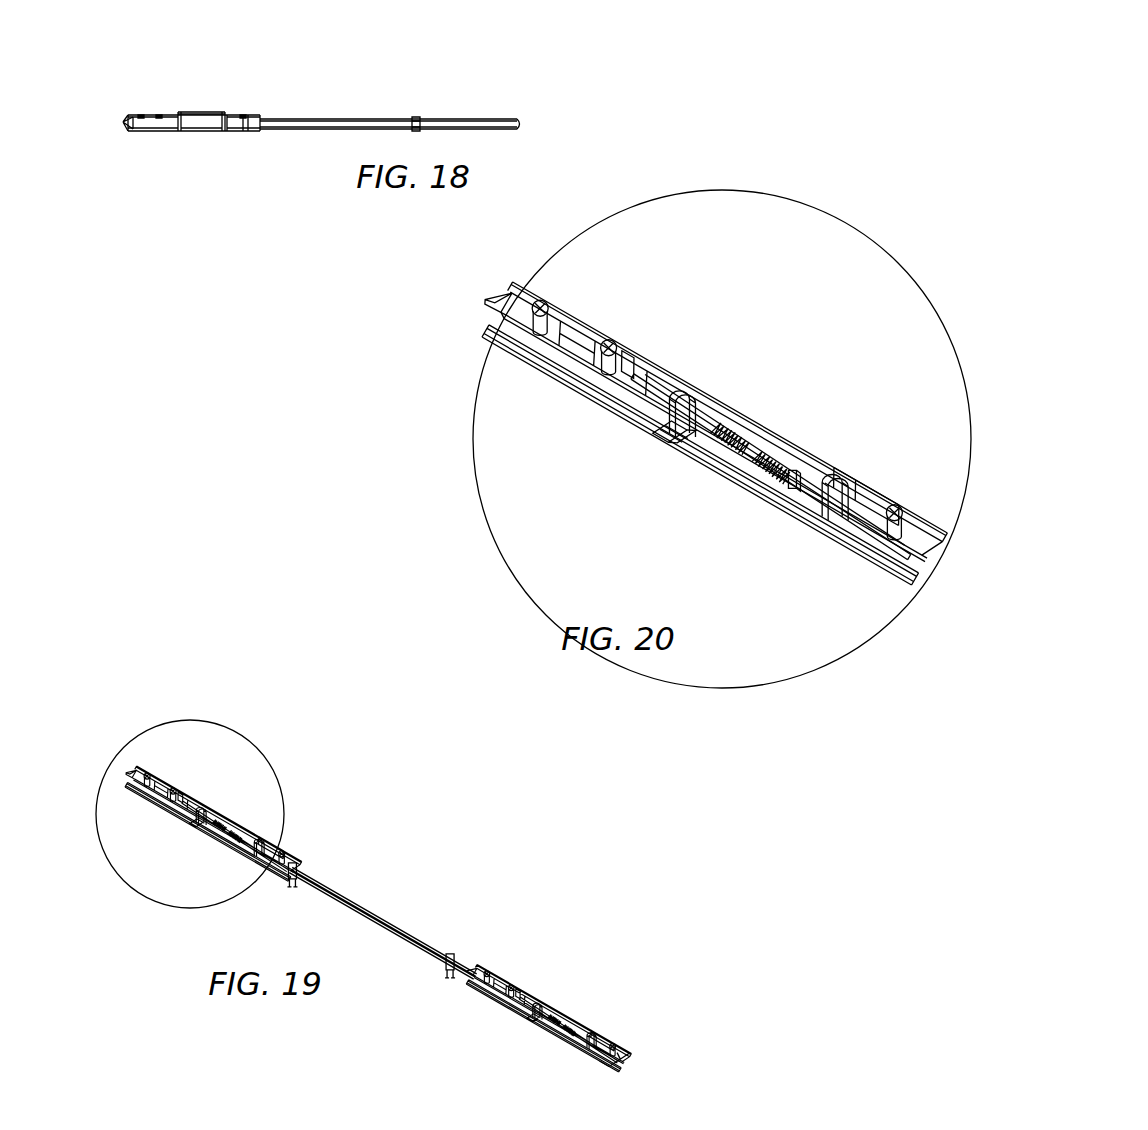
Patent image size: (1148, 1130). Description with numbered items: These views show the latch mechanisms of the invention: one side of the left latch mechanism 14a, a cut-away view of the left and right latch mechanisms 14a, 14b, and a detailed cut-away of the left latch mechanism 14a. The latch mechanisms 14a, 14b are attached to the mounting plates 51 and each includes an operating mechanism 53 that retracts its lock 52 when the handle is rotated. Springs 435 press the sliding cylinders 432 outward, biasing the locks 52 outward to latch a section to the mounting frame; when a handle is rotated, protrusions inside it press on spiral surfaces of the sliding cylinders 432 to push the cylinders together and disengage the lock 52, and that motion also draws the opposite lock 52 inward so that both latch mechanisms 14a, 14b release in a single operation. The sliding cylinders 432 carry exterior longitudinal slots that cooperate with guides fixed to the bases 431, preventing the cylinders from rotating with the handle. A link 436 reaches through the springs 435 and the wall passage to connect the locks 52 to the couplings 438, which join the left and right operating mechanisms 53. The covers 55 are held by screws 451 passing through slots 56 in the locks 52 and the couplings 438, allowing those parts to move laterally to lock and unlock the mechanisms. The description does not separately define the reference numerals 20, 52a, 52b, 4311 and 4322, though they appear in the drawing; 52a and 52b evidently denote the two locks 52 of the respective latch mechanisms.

In FIG. 18, the left latch mechanism 14a is at (191, 73).
In FIG. 20, the left latch mechanism 14a is at (790, 228).
In FIG. 19, the left latch mechanism 14a is at (123, 797).
In FIG. 19, the right latch mechanism 14b is at (502, 947).
In FIG. 19, the slide rail assembly 20 is at (207, 738).
In FIG. 18, the mounting plate 51 is at (297, 130).
In FIG. 18, the lock 52 is at (123, 122).
In FIG. 20, the lock 52 is at (567, 343).
In FIG. 19, the first end block 52a is at (130, 770).
In FIG. 19, the second end block 52b is at (632, 1055).
In FIG. 20, the operating mechanism 53 is at (720, 371).
In FIG. 18, the cover 55 is at (150, 130).
In FIG. 20, the cover 55 is at (608, 345).
In FIG. 20, the slot 56 is at (588, 358).
In FIG. 20, the base 431 is at (660, 440).
In FIG. 20, the guide portion 4311 is at (667, 444).
In FIG. 20, the sliding cylinder 432 is at (733, 403).
In FIG. 20, the retaining arch 4322 is at (697, 388).
In FIG. 20, the spring 435 is at (761, 465).
In FIG. 20, the link 436 is at (799, 483).
In FIG. 20, the coupling 438 is at (812, 538).
In FIG. 18, the screw 451 is at (247, 117).
In FIG. 20, the screw 451 is at (622, 365).